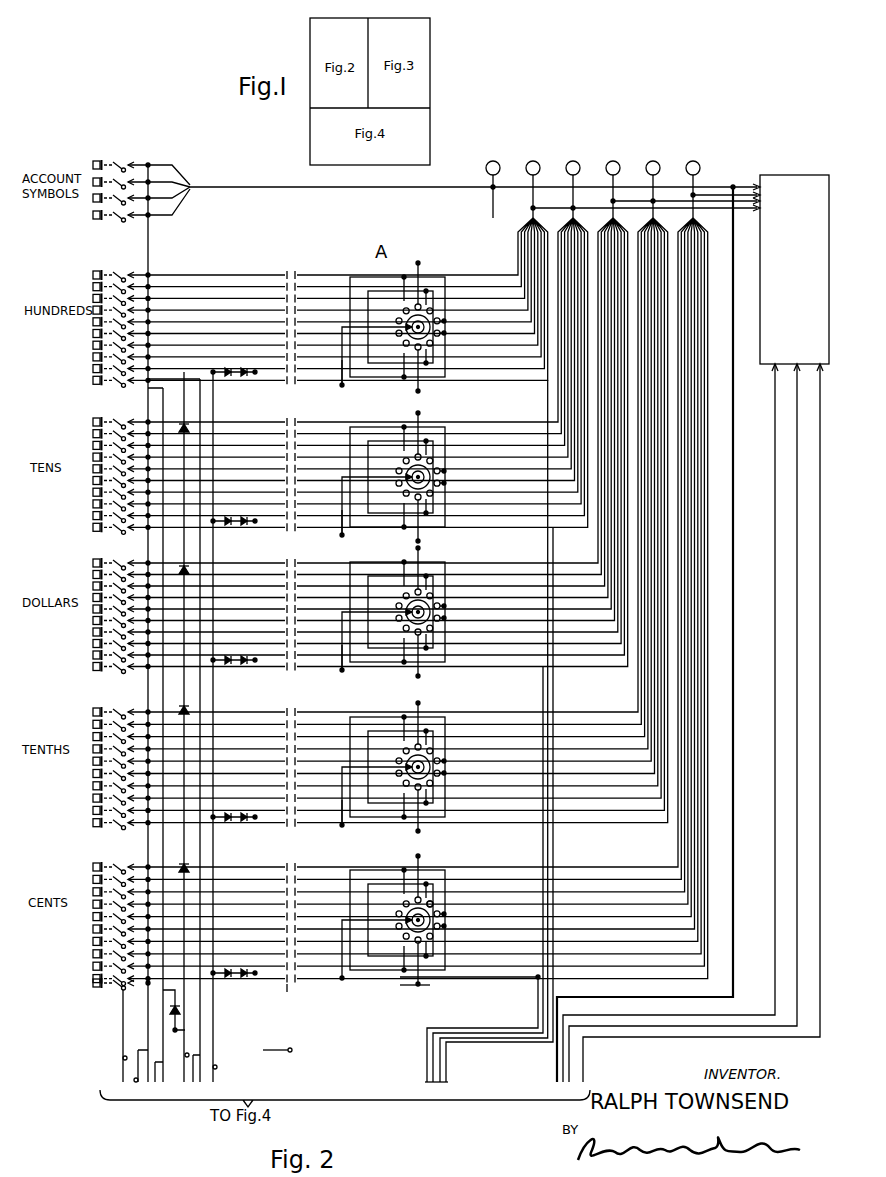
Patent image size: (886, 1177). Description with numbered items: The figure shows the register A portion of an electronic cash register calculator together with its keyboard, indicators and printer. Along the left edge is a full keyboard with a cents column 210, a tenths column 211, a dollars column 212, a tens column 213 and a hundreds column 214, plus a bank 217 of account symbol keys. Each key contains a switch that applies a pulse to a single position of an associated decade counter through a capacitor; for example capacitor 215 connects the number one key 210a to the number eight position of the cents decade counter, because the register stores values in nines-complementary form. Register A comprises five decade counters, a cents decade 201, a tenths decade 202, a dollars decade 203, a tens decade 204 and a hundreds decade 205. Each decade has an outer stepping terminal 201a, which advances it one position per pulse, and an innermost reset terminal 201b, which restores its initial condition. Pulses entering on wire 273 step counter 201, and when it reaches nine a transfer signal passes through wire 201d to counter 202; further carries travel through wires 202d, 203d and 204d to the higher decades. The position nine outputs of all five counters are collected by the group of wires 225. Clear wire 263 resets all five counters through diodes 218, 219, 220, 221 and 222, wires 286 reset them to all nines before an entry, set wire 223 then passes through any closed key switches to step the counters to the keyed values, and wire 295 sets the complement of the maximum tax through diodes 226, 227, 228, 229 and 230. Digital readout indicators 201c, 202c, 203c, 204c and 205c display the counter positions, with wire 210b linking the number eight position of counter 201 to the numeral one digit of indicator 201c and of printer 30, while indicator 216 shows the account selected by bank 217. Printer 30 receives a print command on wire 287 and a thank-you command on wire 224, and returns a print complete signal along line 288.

The bank of account symbol keys 217 is at (103, 163).
The hundreds column 214 is at (84, 329).
The tens column 213 is at (80, 485).
The dollars column 212 is at (80, 622).
The tenths column 211 is at (82, 770).
The cents column 210 is at (88, 924).
The No. 1 key 210a is at (100, 976).
The wire 210b is at (520, 978).
The additional indicator 216 is at (490, 163).
The hundreds digital readout indicator 205c is at (532, 162).
The tens digital readout indicator 204c is at (580, 158).
The dollars digital readout indicator 203c is at (613, 162).
The tenths digital readout indicator 202c is at (655, 158).
The cents indicator 201c is at (700, 158).
The printer 30 is at (803, 175).
The hundreds decade 205 is at (392, 325).
The tens decade 204 is at (392, 475).
The dollars decade 203 is at (392, 610).
The tenths decade 202 is at (392, 765).
The cents decade 201 is at (392, 918).
The wire 204d is at (345, 408).
The wire 203d is at (345, 558).
The wire 202d is at (360, 700).
The wire 201d is at (330, 858).
The outer terminal 201a is at (430, 900).
The innermost reset terminal 201b is at (430, 985).
The diode 230 is at (235, 378).
The diode 229 is at (232, 523).
The diode 228 is at (235, 655).
The diode 227 is at (240, 822).
The diode 226 is at (228, 978).
The diode 222 is at (210, 417).
The diode 221 is at (209, 562).
The diode 220 is at (190, 706).
The diode 219 is at (190, 870).
The diode 218 is at (170, 1012).
The wires 286 is at (123, 1060).
The wire 223 is at (134, 1082).
The wire 263 is at (190, 1052).
The wire 295 is at (217, 1066).
The wire 273 is at (292, 1048).
The group of wires 225 is at (448, 1060).
The capacitor 215 is at (293, 988).
The line 288 is at (770, 965).
The wire 224 is at (798, 995).
The wire 287 is at (585, 1062).